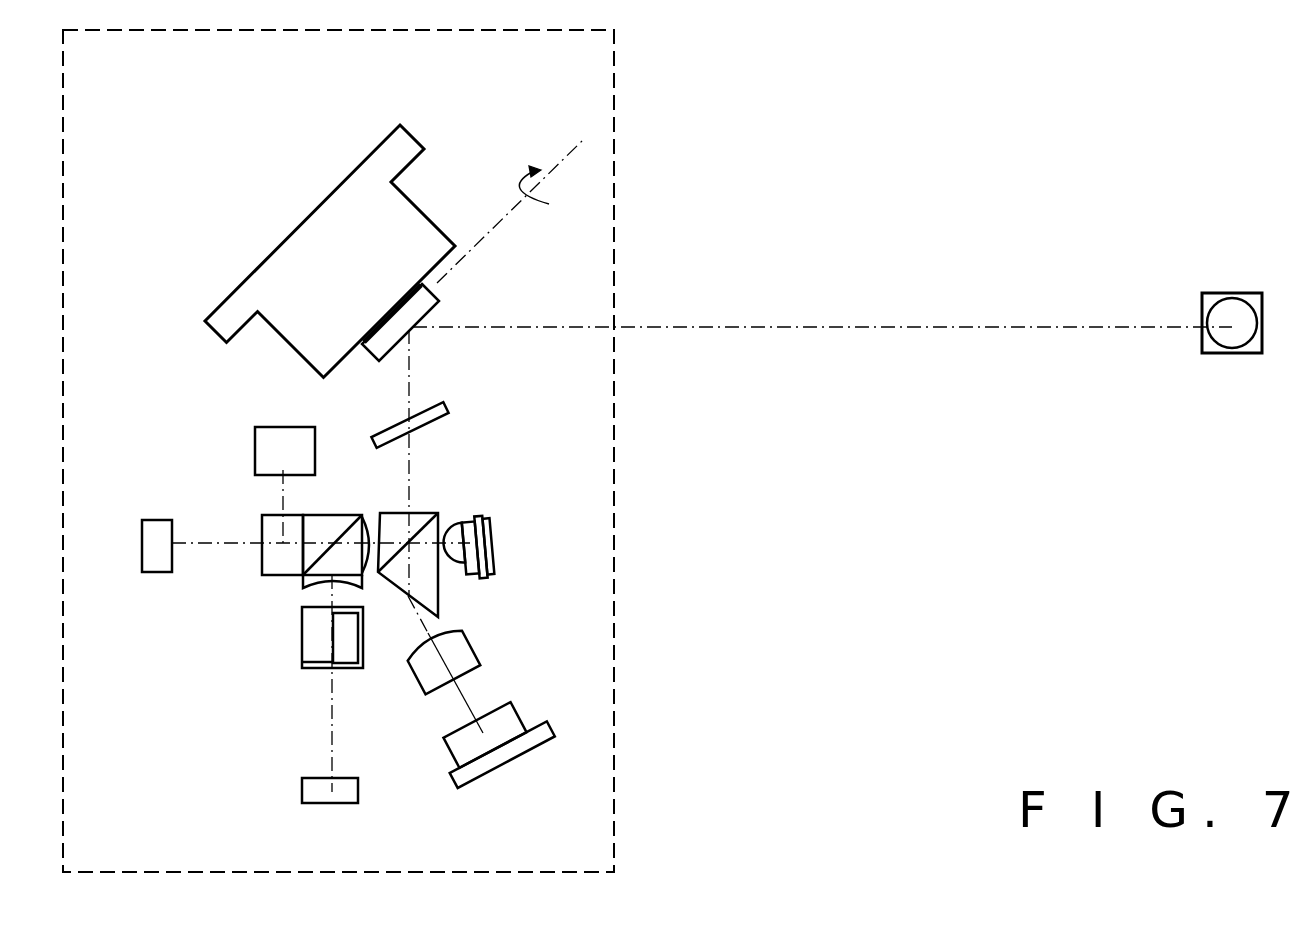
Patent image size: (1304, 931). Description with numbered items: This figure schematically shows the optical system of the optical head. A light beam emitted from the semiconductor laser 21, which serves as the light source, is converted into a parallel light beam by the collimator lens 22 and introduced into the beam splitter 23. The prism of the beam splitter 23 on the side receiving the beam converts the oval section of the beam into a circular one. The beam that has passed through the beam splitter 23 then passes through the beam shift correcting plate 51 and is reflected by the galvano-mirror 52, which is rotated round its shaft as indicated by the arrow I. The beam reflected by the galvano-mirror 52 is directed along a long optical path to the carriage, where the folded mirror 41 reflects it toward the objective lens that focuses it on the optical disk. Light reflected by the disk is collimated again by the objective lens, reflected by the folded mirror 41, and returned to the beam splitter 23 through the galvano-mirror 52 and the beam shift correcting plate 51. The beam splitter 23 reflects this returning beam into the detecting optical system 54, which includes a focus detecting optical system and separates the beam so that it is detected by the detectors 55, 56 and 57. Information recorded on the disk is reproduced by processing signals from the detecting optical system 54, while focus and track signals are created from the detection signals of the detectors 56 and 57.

The semiconductor laser 21 is at (496, 770).
The collimator lens 22 is at (464, 650).
The beam splitter 23 is at (428, 513).
The folded mirror 41 is at (1237, 293).
The beam shift correcting plate 51 is at (440, 409).
The galvano-mirror 52 is at (376, 346).
The detecting optical system 54 is at (260, 612).
The detector 55 is at (258, 462).
The detector 56 is at (152, 555).
The detector 57 is at (490, 537).
The arrow I is at (540, 205).